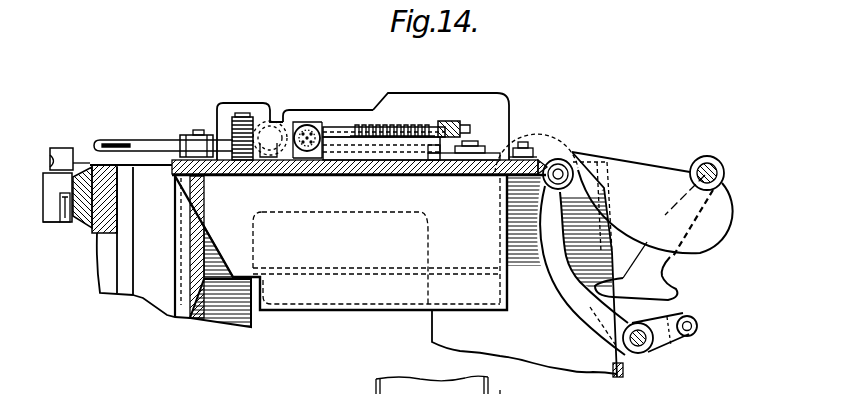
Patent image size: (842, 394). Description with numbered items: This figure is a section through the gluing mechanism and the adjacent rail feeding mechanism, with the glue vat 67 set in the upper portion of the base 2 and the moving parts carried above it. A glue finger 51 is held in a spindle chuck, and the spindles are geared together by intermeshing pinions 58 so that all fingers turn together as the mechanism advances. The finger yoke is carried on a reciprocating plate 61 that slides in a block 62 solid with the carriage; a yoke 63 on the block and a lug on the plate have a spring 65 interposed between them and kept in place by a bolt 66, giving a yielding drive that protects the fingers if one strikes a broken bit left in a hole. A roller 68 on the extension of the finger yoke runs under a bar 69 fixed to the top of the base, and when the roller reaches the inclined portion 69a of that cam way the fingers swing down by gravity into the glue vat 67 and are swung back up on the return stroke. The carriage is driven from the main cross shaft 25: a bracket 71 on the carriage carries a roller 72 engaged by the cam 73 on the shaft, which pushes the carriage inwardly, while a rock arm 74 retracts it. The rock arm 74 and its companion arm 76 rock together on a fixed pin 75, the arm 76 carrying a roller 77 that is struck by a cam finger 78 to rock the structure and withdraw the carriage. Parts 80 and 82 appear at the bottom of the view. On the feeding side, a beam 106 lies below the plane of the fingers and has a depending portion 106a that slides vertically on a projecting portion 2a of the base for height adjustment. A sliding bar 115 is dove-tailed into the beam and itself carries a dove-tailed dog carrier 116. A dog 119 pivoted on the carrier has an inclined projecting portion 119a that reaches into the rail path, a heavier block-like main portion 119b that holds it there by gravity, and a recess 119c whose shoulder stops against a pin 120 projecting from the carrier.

The base 2 is at (456, 166).
The projecting portion of the base 2a is at (147, 290).
The main cross shaft 25 is at (720, 163).
The glue fingers 51 is at (143, 141).
The intermeshing pinions 58 is at (240, 117).
The reciprocating plate 61 is at (335, 139).
The block 62 is at (395, 166).
The yoke 63 is at (458, 125).
The spring 65 is at (424, 125).
The bolt 66 is at (460, 132).
The glue vat 67 is at (396, 275).
The roller 68 is at (298, 123).
The bar 69 is at (375, 104).
The inclined portion of the cam way 69a is at (402, 123).
The bracket 71 is at (548, 153).
The roller 72 is at (558, 158).
The cam 73 is at (652, 264).
The rock arm 74 is at (568, 305).
The fixed pin 75 is at (643, 351).
The arm 76 is at (673, 344).
The roller 77 is at (700, 326).
The cam finger 78 is at (643, 285).
The box 80 is at (432, 385).
The box 82 is at (515, 388).
The plate or beam 106 is at (131, 230).
The depending portion of the beam 106a is at (103, 276).
The sliding bar 115 is at (110, 225).
The dog carrier 116 is at (88, 201).
The dogs 119 is at (77, 168).
The projecting portion of the dog 119a is at (61, 148).
The main portion of the dog 119b is at (57, 197).
The recess of the dog 119c is at (52, 222).
The pin 120 is at (67, 198).